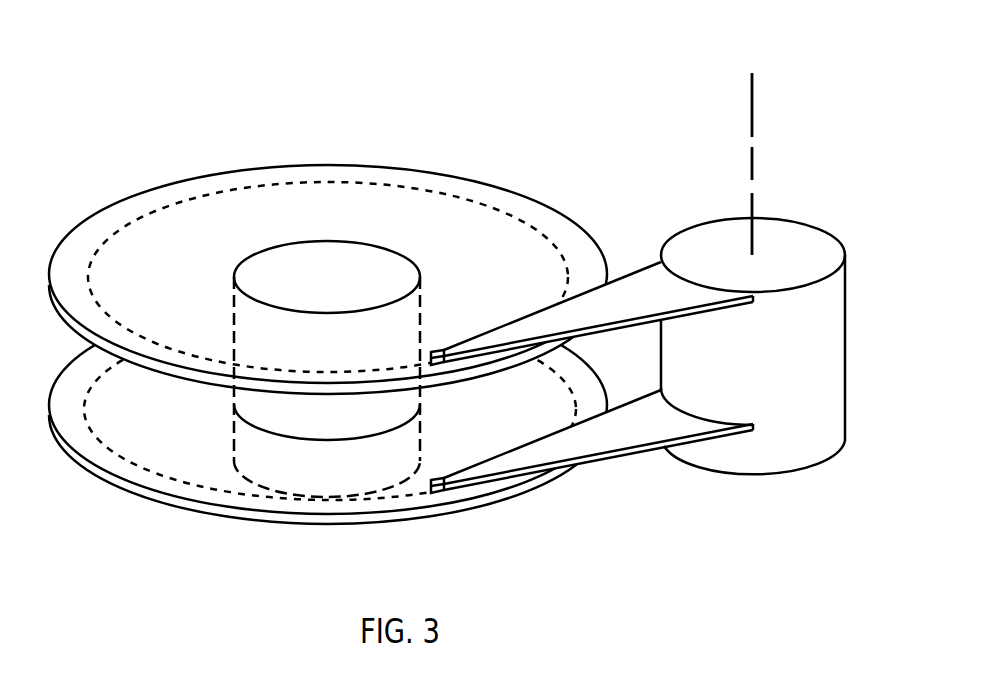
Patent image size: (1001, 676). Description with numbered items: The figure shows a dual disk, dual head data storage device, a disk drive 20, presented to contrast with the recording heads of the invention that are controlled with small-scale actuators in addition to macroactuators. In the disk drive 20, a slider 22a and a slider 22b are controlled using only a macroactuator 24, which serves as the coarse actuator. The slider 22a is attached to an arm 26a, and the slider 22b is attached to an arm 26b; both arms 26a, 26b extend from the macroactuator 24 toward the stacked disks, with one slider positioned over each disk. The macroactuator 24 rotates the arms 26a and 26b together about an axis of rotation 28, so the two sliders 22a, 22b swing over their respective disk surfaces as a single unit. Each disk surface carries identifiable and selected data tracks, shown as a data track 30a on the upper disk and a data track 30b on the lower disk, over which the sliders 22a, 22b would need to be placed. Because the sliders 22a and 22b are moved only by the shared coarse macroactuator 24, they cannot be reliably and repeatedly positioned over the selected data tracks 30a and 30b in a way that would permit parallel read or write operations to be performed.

The disk drive 20 is at (448, 294).
The slider 22a is at (440, 349).
The slider 22b is at (459, 490).
The macroactuator 24 is at (795, 218).
The arm 26a is at (622, 275).
The arm 26b is at (605, 457).
The axis of rotation 28 is at (751, 90).
The data track 30a is at (112, 237).
The data track 30b is at (172, 478).